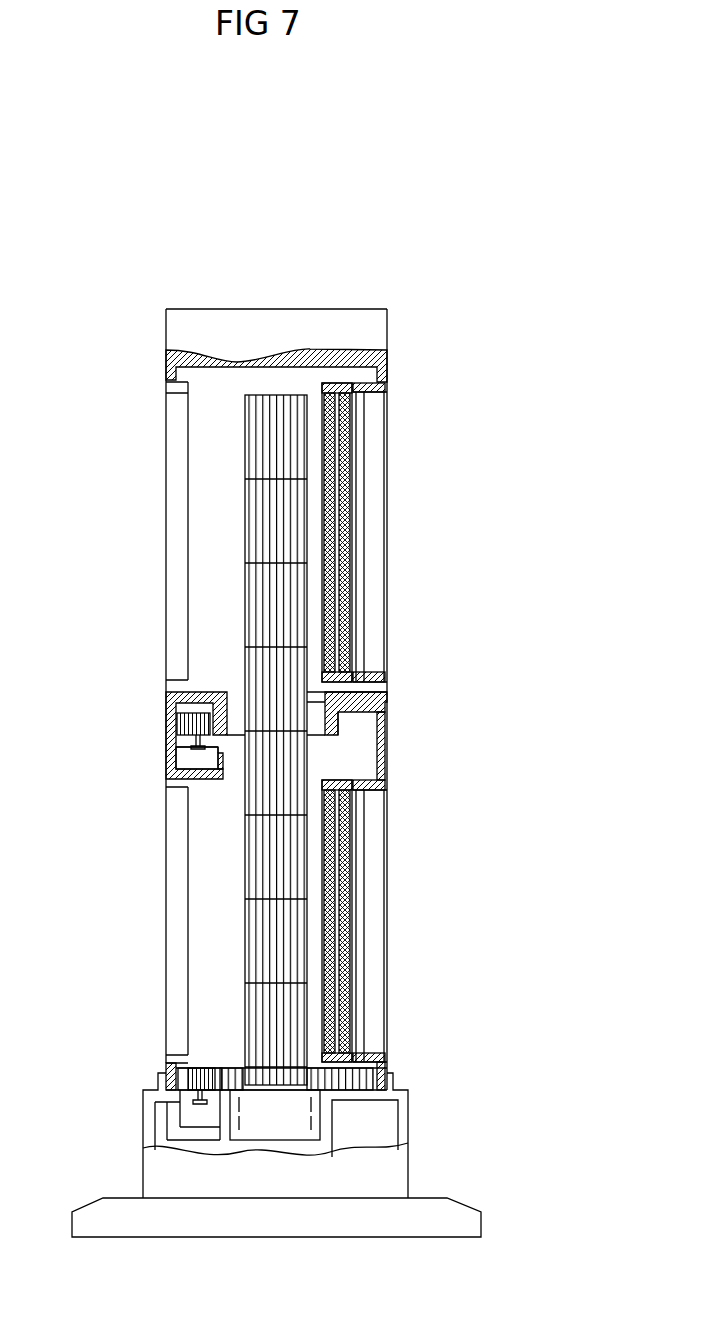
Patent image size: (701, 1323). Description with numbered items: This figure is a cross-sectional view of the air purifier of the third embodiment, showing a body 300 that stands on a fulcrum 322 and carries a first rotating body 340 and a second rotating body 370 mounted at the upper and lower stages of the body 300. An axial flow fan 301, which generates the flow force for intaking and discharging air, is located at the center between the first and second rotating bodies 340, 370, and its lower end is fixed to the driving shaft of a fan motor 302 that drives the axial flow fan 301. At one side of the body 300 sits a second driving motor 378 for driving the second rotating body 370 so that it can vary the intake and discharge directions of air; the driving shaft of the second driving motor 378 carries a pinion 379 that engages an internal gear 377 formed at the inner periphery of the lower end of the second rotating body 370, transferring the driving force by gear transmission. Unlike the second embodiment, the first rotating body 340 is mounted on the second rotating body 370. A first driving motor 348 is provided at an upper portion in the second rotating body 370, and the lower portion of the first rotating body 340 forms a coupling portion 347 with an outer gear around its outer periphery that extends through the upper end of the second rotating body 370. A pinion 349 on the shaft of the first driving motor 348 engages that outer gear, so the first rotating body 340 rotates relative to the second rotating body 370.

The body 300 is at (133, 279).
The first rotating body 340 is at (383, 331).
The coupling portion 347 is at (183, 697).
The pinion 349 is at (177, 721).
The first driving motor 348 is at (190, 758).
The second rotating body 370 is at (388, 745).
The axial flow fan 301 is at (258, 948).
The internal gear 377 is at (220, 1068).
The pinion 379 is at (165, 1078).
The second driving motor 378 is at (190, 1113).
The fan motor 302 is at (274, 1137).
The fulcrum 322 is at (405, 1218).